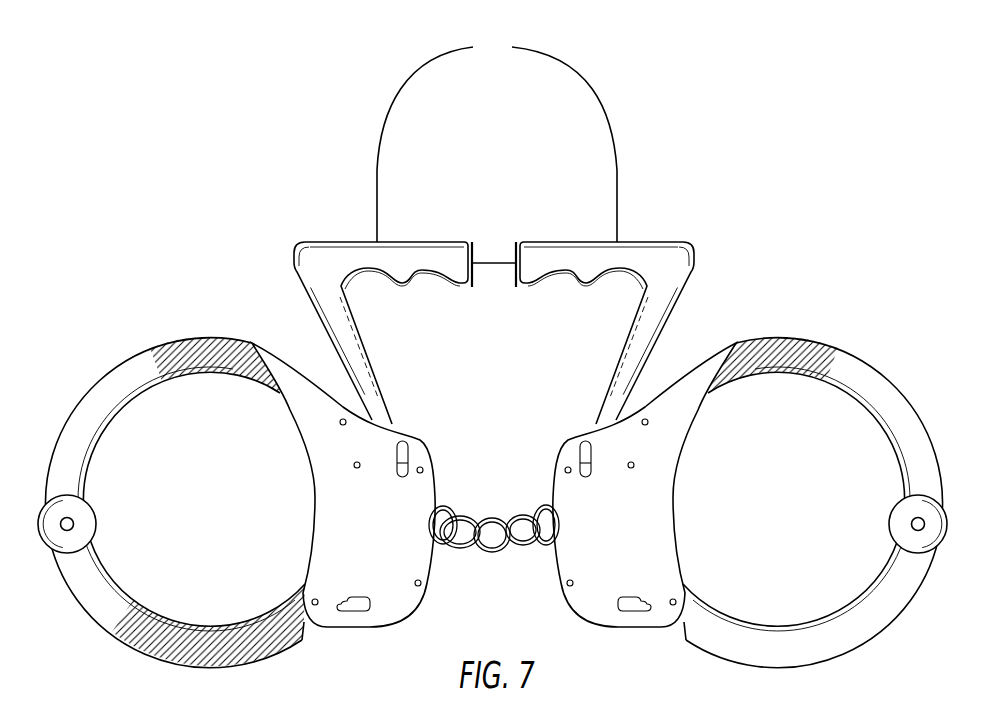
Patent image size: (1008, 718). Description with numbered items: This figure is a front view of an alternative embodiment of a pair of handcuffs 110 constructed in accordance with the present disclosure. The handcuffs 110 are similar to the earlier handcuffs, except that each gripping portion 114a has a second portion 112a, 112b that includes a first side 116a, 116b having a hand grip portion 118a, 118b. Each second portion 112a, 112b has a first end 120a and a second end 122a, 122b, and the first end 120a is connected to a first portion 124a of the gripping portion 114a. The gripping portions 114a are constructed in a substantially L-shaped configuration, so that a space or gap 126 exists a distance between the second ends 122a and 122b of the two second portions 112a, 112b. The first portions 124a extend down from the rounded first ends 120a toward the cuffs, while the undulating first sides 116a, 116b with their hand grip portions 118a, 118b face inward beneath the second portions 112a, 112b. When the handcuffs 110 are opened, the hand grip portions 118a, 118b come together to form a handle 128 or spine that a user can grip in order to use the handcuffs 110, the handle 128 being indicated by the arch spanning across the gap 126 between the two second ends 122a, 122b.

The pair of handcuffs 110 is at (617, 140).
The second portion 112a is at (343, 253).
The second portion 112b is at (655, 252).
The gripping portion 114a is at (323, 290).
The first side 116a is at (401, 285).
The first side 116b is at (572, 277).
The hand grip portion 118a is at (421, 278).
The hand grip portion 118b is at (608, 283).
The first end 120a is at (300, 248).
The second end 122a is at (440, 253).
The second end 122b is at (541, 252).
The first portion 124a is at (318, 330).
The space or gap 126 is at (498, 262).
The handle 128 is at (497, 137).